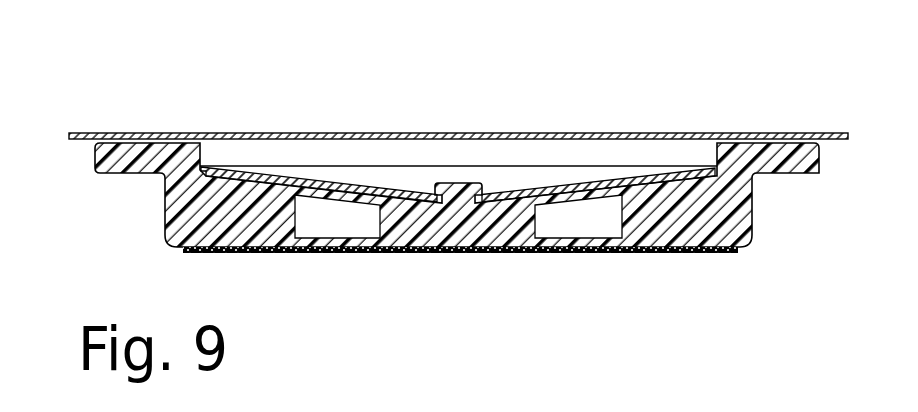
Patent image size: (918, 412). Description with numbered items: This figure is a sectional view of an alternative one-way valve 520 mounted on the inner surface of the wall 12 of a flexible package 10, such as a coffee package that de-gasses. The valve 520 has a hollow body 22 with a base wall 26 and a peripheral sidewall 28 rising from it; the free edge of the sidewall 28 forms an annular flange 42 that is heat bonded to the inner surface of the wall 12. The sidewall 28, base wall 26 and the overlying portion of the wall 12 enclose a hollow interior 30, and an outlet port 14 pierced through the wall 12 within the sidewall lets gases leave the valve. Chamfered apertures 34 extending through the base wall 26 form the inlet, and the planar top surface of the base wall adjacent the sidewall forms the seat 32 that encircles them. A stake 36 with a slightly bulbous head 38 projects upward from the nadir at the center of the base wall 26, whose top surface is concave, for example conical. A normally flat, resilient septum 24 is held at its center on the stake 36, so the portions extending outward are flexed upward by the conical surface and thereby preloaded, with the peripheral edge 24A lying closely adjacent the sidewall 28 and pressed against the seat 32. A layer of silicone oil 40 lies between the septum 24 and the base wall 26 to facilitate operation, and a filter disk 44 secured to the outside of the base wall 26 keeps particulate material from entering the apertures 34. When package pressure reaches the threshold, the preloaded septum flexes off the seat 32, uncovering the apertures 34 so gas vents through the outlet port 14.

The flexible package 10 is at (405, 131).
The wall 12 is at (441, 136).
The outlet port 14 is at (232, 134).
The hollow body 22 is at (733, 174).
The septum 24 is at (635, 169).
The peripheral edge 24A is at (711, 168).
The base wall 26 is at (733, 250).
The sidewall 28 is at (173, 198).
The hollow interior 30 is at (513, 158).
The seat 32 is at (220, 238).
The apertures 34 is at (322, 231).
The stake 36 is at (455, 190).
The bulbous head 38 is at (457, 200).
The silicone oil 40 is at (200, 168).
The annular flange 42 is at (768, 170).
The filter disk 44 is at (182, 250).
The valve 520 is at (760, 212).